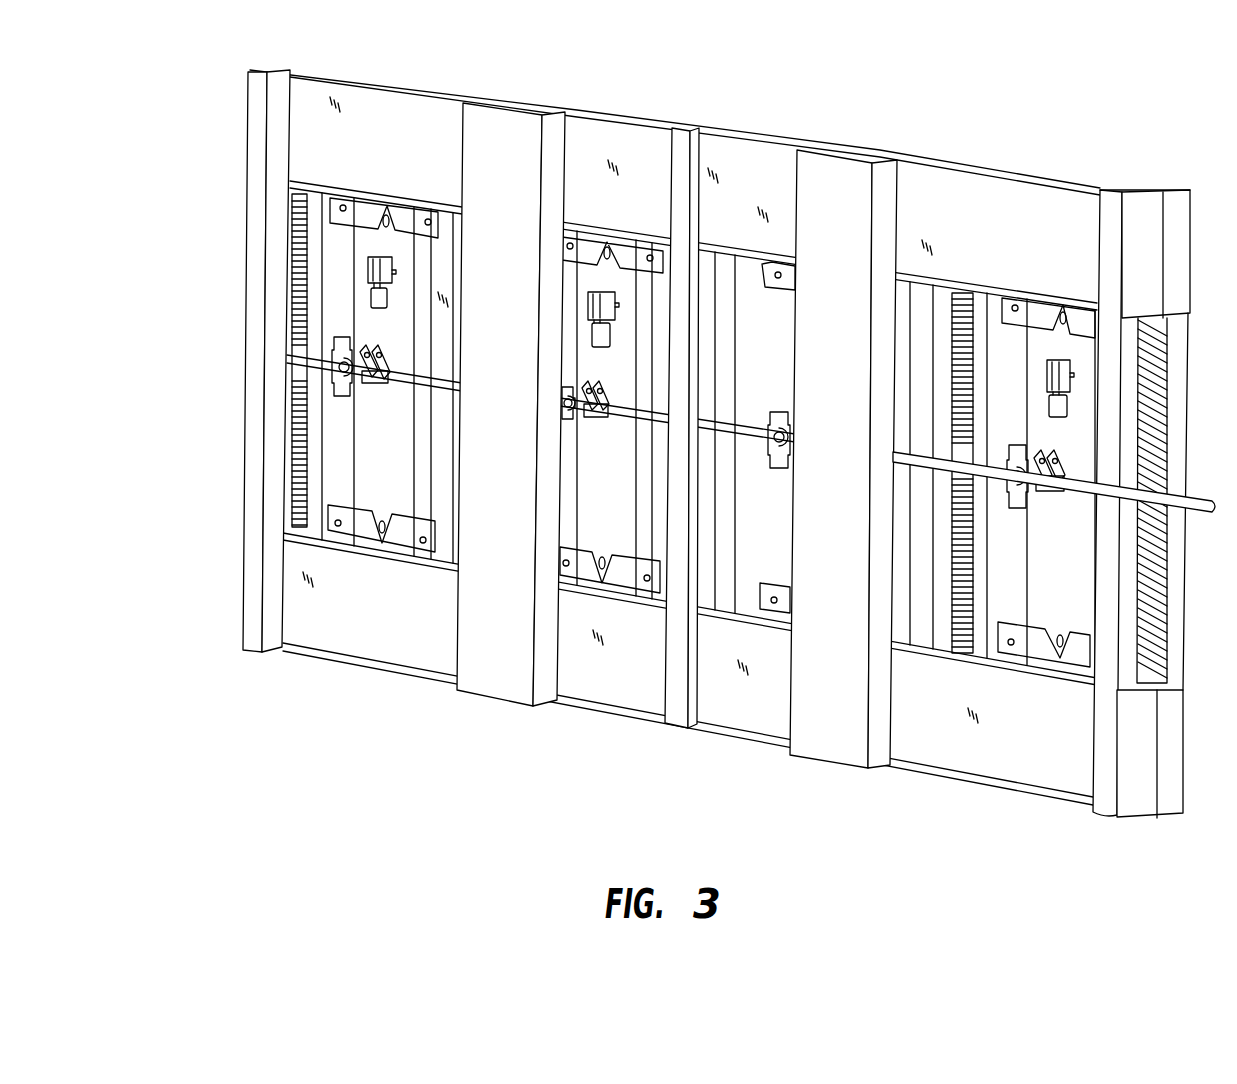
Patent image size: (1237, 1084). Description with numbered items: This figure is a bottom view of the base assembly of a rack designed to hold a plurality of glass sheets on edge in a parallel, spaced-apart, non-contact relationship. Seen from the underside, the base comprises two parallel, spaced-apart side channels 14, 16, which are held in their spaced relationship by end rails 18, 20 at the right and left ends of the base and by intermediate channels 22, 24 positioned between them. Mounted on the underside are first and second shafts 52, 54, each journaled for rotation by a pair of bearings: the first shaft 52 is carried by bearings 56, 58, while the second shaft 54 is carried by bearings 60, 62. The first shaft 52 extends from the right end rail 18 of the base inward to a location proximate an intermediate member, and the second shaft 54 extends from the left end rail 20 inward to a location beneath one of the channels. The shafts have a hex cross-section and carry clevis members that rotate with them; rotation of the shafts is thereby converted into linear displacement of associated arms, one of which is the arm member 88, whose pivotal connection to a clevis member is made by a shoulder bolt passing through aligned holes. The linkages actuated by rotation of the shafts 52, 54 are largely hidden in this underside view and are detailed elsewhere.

The side channel 14 is at (399, 161).
The side channel 16 is at (392, 610).
The end rail 18 is at (1177, 563).
The end rail 20 is at (243, 238).
The intermediate channel 22 is at (818, 227).
The intermediate channel 24 is at (492, 180).
The first shaft 52 is at (747, 422).
The second shaft 54 is at (418, 378).
The bearing 56 is at (1028, 498).
The bearing 58 is at (785, 463).
The bearing 60 is at (567, 428).
The bearing 62 is at (353, 393).
The arm member 88 is at (1048, 403).